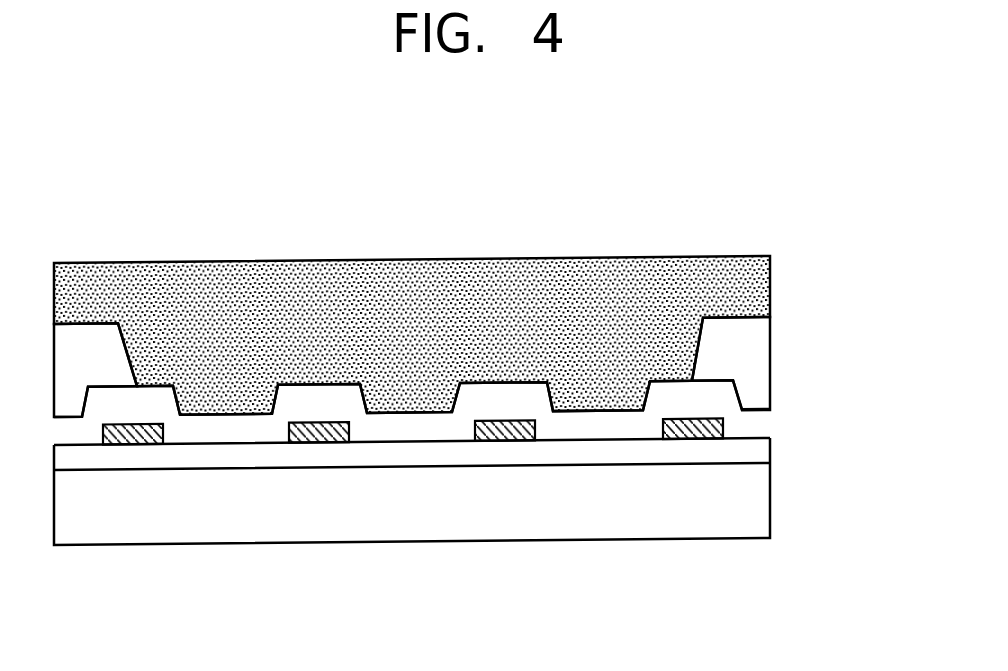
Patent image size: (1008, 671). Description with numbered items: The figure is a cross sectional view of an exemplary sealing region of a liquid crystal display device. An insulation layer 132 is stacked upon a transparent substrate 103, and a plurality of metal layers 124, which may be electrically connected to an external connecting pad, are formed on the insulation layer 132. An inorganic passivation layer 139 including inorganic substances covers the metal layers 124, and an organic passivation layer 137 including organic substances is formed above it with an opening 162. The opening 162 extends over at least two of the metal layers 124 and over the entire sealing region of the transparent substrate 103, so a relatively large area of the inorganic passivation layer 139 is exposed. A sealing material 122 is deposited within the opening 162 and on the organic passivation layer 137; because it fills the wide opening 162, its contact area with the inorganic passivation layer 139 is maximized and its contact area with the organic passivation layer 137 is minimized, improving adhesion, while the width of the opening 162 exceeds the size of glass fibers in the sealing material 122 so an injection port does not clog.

The transparent substrate 103 is at (763, 498).
The insulation layer 132 is at (763, 453).
The metal layers 124 is at (723, 433).
The inorganic passivation layer 139 is at (728, 393).
The organic passivation layer 137 is at (763, 350).
The sealing material 122 is at (763, 285).
The opening 162 is at (257, 314).